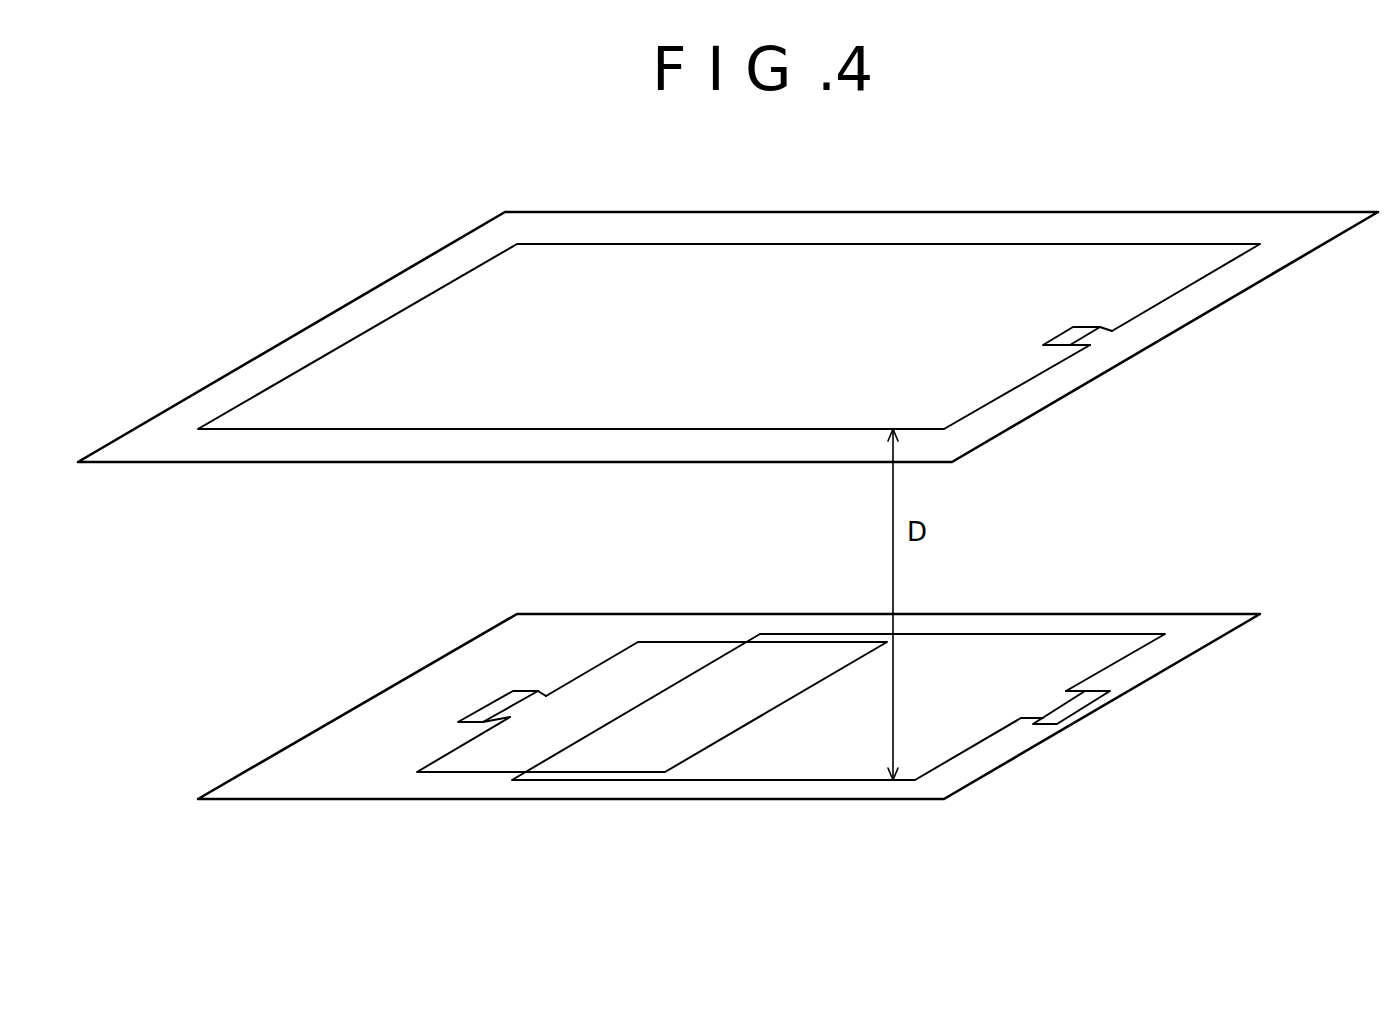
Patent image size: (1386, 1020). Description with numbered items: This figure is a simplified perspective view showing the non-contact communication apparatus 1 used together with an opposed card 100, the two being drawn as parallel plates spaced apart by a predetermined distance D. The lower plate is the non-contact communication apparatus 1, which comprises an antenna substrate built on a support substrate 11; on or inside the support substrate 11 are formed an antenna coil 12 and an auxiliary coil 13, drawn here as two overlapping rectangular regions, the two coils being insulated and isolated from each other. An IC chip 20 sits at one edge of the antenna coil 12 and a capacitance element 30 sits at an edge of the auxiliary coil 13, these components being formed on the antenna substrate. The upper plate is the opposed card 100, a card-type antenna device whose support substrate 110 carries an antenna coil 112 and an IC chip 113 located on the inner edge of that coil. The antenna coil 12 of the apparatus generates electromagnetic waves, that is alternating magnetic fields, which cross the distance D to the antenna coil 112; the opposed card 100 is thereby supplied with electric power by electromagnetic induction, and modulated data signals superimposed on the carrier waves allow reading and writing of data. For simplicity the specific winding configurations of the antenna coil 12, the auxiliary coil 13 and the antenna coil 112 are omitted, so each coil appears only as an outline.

The non-contact communication apparatus 1 is at (729, 694).
The support substrate 11 is at (838, 789).
The antenna coil 12 is at (716, 782).
The auxiliary coil 13 is at (478, 775).
The integrated circuit (IC) chip 20 is at (1098, 701).
The capacitance element 30 is at (494, 706).
The opposed card 100 is at (728, 288).
The substrate 110 is at (903, 233).
The antenna coil 112 is at (715, 244).
The IC chip 113 is at (1079, 326).